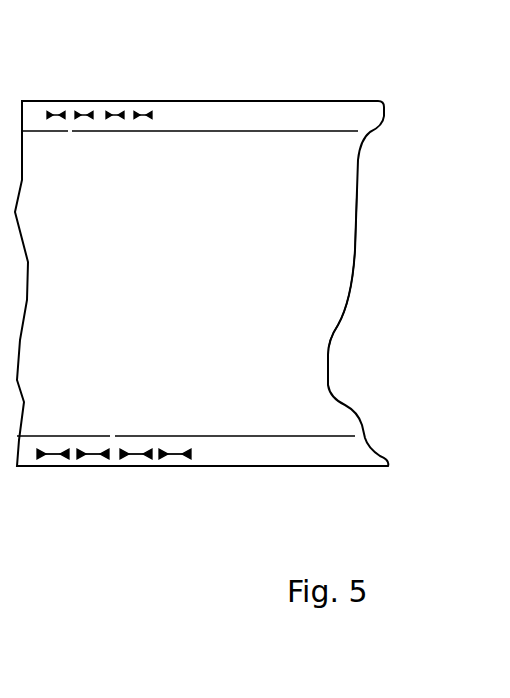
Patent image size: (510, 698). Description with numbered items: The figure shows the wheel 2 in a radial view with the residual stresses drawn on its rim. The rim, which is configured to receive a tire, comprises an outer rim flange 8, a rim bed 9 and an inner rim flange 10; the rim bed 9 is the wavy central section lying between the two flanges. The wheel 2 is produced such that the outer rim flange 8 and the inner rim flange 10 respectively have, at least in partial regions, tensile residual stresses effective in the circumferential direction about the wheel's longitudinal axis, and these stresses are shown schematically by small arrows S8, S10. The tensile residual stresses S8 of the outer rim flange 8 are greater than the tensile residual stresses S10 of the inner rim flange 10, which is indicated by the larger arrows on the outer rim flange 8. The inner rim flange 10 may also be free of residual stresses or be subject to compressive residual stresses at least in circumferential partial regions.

The wheel 2 is at (170, 88).
The outer rim flange 8 is at (232, 460).
The rim bed 9 is at (340, 257).
The inner rim flange 10 is at (322, 112).
The tensile residual stresses of the outer rim flange S8 is at (139, 456).
The tensile residual stresses of the inner rim flange S10 is at (86, 115).